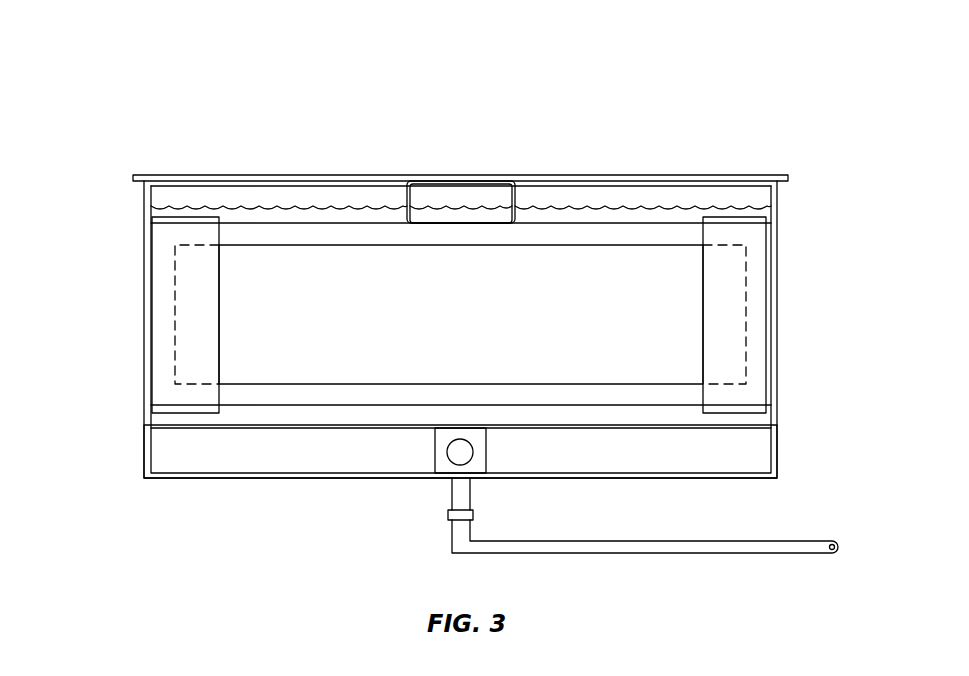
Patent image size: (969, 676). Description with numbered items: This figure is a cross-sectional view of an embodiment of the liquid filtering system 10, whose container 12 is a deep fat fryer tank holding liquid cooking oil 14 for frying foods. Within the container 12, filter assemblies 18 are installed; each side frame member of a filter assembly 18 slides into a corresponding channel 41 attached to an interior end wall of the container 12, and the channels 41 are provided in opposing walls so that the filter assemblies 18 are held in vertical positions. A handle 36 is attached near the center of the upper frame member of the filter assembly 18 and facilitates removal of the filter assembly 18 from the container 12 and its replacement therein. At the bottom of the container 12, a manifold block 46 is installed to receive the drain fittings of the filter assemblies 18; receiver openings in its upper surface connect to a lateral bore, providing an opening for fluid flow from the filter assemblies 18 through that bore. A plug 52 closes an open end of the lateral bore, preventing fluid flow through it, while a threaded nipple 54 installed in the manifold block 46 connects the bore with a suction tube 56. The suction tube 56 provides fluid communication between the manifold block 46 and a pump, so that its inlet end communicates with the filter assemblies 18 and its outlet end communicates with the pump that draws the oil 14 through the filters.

The liquid filtering system 10 is at (104, 66).
The container 12 is at (551, 174).
The liquid cooking oil 14 is at (293, 206).
The filter assembly 18 is at (604, 222).
The handle 36 is at (404, 196).
The channel 41 is at (188, 216).
The manifold block 46 is at (486, 452).
The plug 52 is at (460, 452).
The threaded nipple 54 is at (450, 498).
The suction tube 56 is at (808, 556).